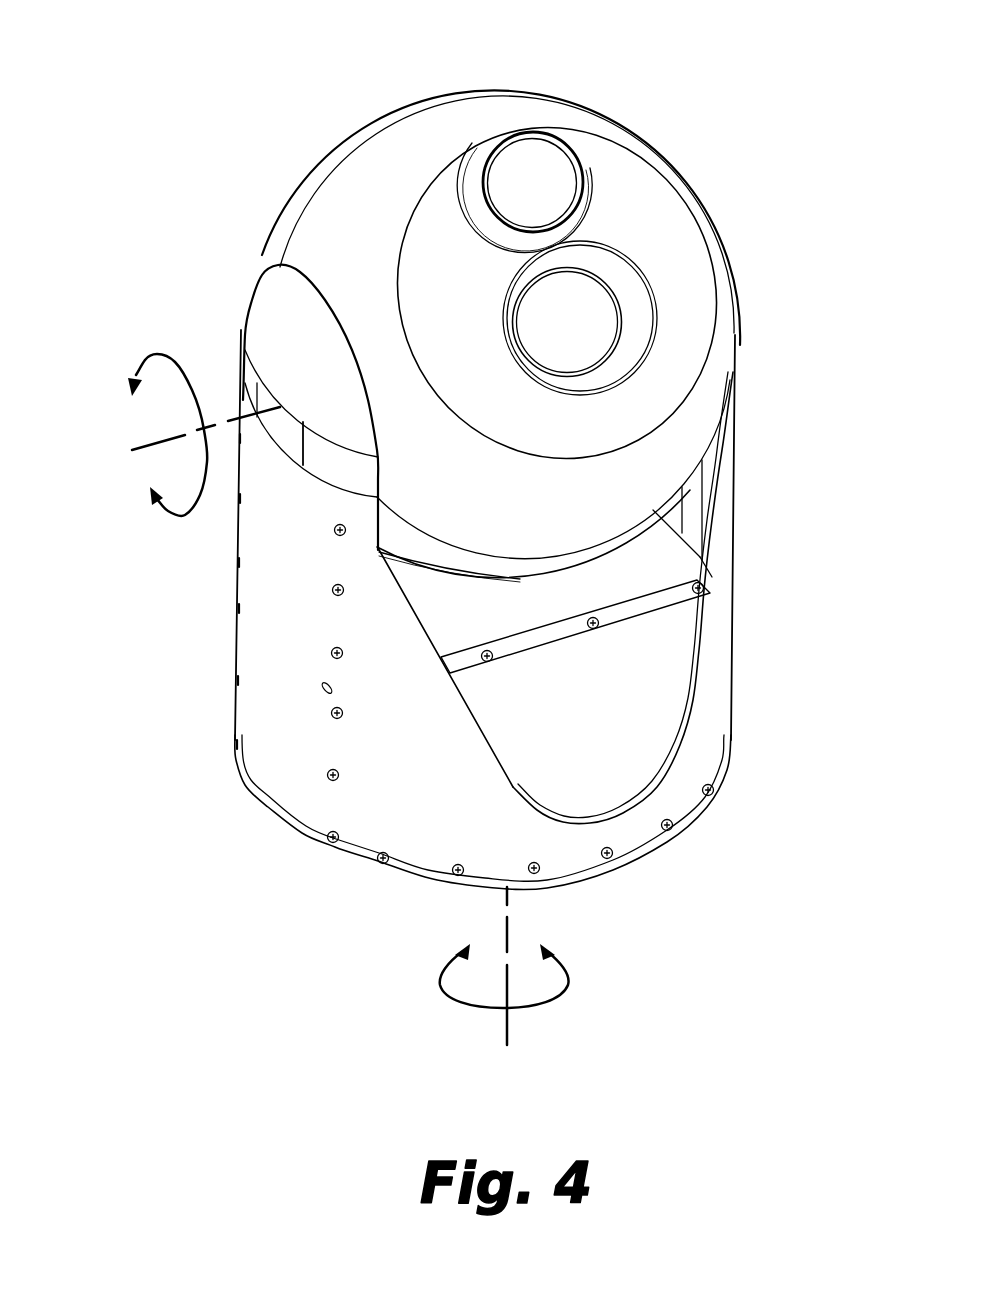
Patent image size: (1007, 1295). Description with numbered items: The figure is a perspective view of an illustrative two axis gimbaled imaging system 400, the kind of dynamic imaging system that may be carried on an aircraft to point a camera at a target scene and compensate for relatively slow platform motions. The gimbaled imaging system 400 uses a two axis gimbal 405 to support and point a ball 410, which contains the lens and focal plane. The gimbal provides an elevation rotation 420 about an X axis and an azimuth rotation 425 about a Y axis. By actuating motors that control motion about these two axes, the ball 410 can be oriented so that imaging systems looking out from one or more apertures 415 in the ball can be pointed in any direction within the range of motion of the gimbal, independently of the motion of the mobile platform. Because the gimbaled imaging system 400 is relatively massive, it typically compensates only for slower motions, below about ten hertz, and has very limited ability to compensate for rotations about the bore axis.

The two axis gimbaled imaging system 400 is at (203, 76).
The two axis gimbal 405 is at (720, 685).
The ball 410 is at (370, 142).
The apertures 415 is at (593, 317).
The elevation rotation 420 is at (142, 353).
The azimuth rotation 425 is at (440, 983).